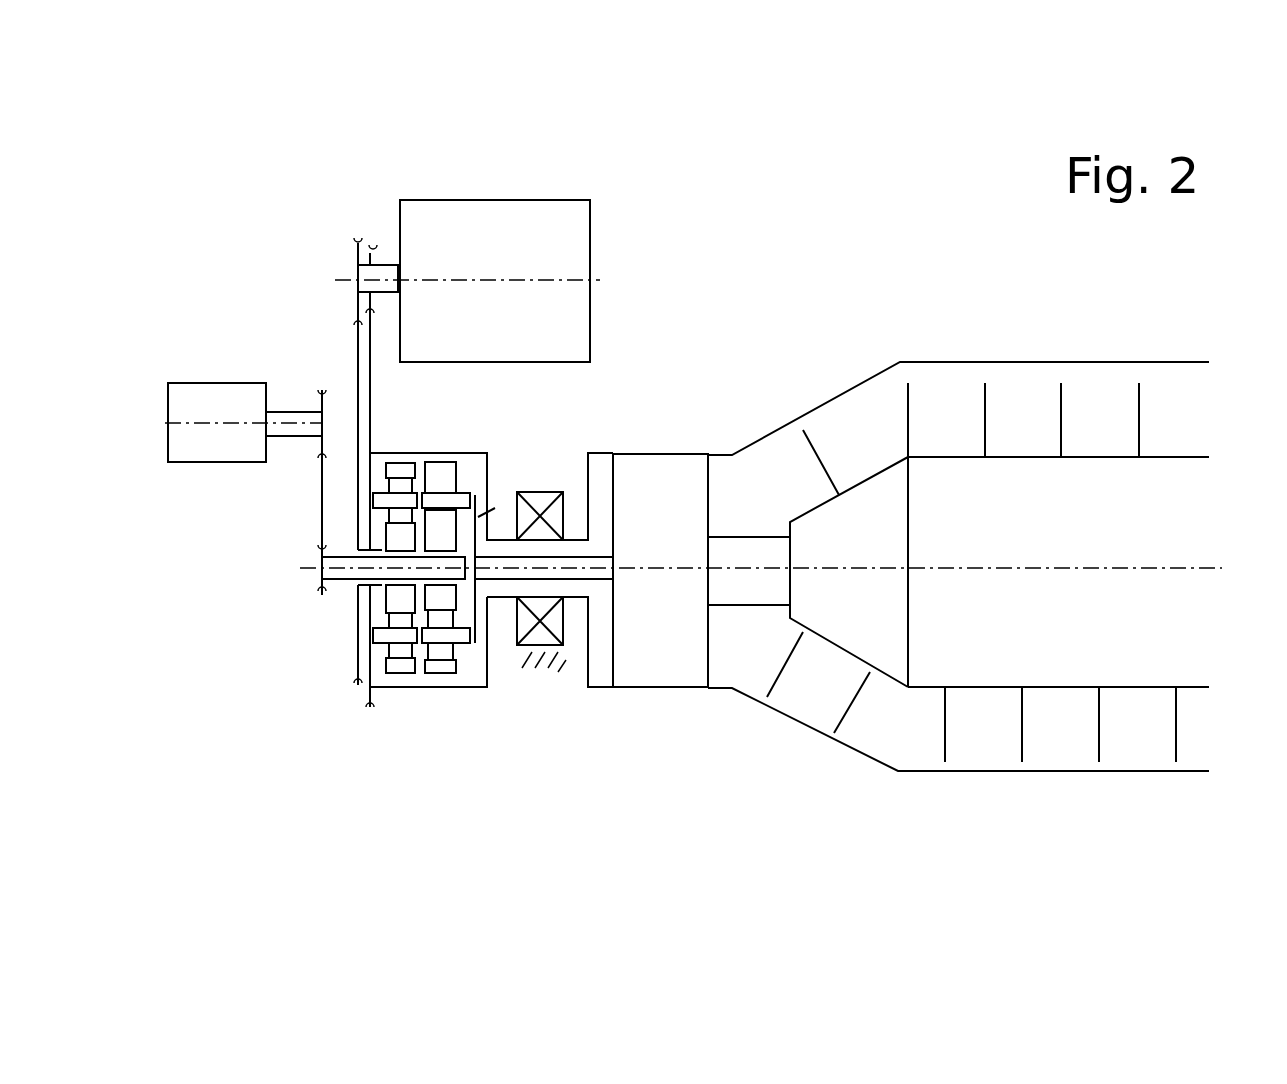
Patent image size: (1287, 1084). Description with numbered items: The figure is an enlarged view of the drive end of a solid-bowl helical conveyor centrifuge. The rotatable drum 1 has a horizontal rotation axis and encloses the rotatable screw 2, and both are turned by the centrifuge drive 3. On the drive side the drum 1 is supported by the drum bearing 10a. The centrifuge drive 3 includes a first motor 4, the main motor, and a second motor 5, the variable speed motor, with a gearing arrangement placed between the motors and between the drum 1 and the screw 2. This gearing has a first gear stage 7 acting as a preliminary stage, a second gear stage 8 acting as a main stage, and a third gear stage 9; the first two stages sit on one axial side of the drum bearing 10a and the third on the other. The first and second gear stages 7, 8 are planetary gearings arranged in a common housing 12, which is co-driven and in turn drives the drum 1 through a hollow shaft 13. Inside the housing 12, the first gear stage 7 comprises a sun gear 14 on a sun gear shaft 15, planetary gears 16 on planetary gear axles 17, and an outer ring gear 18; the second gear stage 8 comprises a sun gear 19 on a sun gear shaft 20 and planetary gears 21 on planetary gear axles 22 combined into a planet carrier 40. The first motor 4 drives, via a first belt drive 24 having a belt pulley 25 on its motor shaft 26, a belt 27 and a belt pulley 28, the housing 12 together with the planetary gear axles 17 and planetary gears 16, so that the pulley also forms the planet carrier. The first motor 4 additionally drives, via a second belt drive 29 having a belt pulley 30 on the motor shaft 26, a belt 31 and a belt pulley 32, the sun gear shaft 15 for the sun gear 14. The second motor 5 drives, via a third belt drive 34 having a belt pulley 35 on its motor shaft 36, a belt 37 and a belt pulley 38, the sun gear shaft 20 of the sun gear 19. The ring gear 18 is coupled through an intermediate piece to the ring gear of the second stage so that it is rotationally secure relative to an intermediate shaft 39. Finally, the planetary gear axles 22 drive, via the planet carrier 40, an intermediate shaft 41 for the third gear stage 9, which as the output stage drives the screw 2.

The drum 1 is at (1012, 362).
The screw 2 is at (985, 437).
The centrifuge drive 3 is at (287, 230).
The first motor 4 is at (592, 200).
The second motor 5 is at (172, 383).
The first gear stage 7 is at (405, 688).
The second gear stage 8 is at (448, 688).
The third gear stage 9 is at (609, 663).
The drum bearing 10a is at (550, 492).
The housing 12 is at (480, 688).
The hollow shaft 13 is at (509, 536).
The sun gear 14 is at (357, 688).
The sun gear shaft 15 is at (366, 585).
The planetary gears 16 is at (372, 707).
The planetary gear axles 17 is at (402, 465).
The outer ring gear 18 is at (458, 487).
The sun gear 19 is at (485, 515).
The sun gear shaft 20 is at (430, 520).
The planetary gears 21 is at (322, 593).
The planetary gear axles 22 is at (473, 452).
The first belt drive 24 is at (375, 238).
The belt pulley 25 is at (370, 256).
The motor shaft 26 is at (381, 453).
The belt 27 is at (357, 330).
The belt pulley 28 is at (318, 462).
The second belt drive 29 is at (359, 230).
The belt pulley 30 is at (358, 243).
The belt 31 is at (358, 358).
The belt pulley 32 is at (322, 515).
The third belt drive 34 is at (318, 595).
The belt pulley 35 is at (320, 448).
The motor shaft 36 is at (266, 440).
The belt 37 is at (320, 482).
The belt pulley 38 is at (318, 578).
The intermediate shaft 39 is at (423, 688).
The planet carrier 40 is at (503, 540).
The intermediate shaft 41 is at (577, 582).